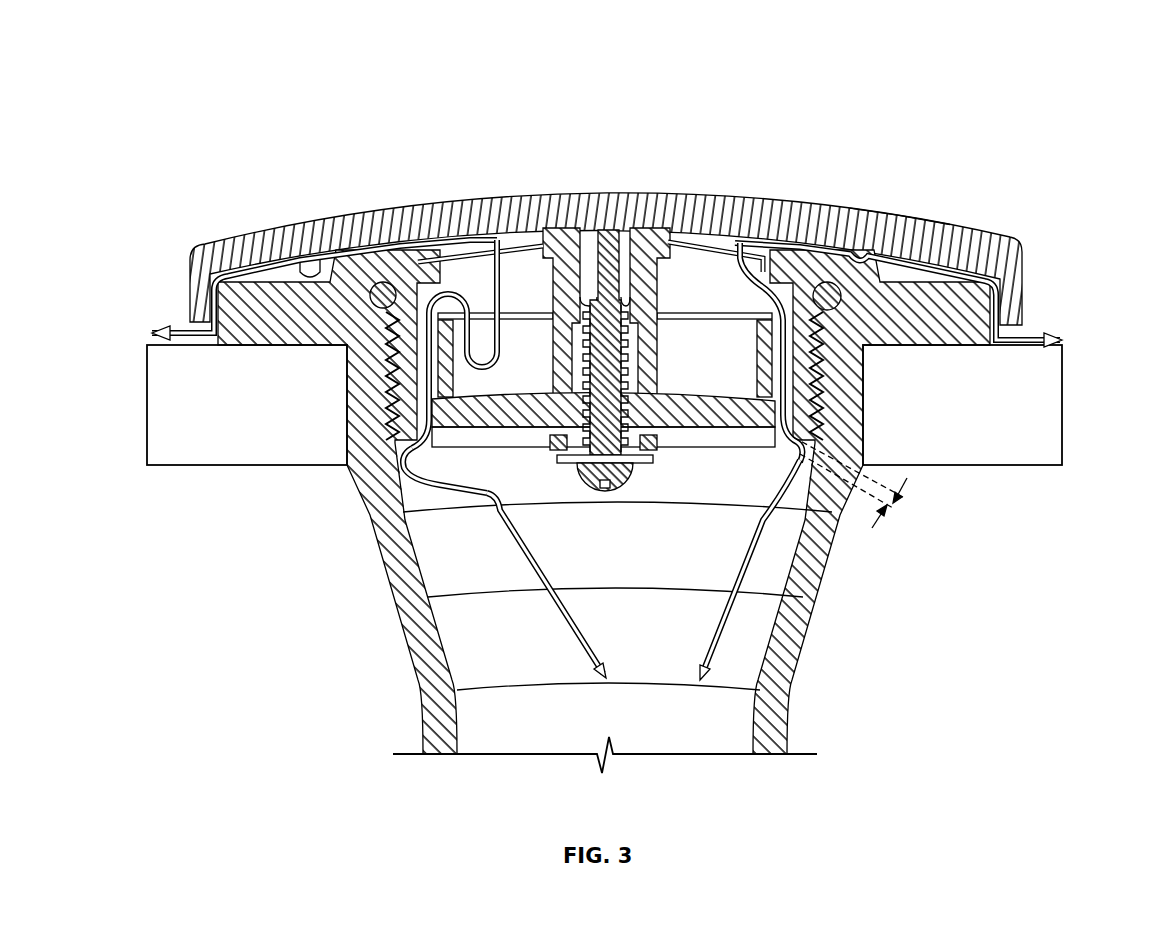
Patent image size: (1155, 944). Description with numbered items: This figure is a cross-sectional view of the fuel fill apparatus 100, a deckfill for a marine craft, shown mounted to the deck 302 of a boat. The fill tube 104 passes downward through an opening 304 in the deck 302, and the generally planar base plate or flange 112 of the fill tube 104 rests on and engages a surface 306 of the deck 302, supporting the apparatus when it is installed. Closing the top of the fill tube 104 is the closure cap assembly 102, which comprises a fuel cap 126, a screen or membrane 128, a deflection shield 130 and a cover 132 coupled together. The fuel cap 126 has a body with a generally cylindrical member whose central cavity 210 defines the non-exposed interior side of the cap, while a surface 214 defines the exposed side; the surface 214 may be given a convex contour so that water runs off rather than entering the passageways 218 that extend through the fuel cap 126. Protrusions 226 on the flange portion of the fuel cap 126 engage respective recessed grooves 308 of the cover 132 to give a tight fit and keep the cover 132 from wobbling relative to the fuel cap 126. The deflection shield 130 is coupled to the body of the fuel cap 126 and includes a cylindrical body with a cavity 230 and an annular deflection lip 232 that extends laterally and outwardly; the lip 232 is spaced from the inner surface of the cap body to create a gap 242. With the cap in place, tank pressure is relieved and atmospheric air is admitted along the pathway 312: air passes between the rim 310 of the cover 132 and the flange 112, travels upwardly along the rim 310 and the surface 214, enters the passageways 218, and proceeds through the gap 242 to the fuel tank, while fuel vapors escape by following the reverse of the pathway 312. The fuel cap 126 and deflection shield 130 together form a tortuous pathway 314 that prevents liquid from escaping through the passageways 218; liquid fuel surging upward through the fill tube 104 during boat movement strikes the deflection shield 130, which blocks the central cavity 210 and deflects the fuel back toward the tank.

The fuel fill apparatus 100 is at (220, 122).
The closure cap assembly 102 is at (1036, 247).
The fill tube 104 is at (788, 738).
The flange 112 is at (223, 317).
The fuel cap 126 is at (648, 237).
The membrane 128 is at (497, 253).
The deflection shield 130 is at (672, 410).
The cover 132 is at (900, 217).
The central cavity 210 is at (741, 304).
The surface 214 is at (553, 242).
The passageways 218 is at (457, 248).
The protrusions 226 is at (850, 248).
The cavity 230 is at (726, 364).
The annular deflection lip 232 is at (445, 476).
The gap 242 is at (898, 505).
The deck 302 is at (1013, 467).
The opening 304 is at (340, 470).
The surface 306 is at (1060, 345).
The recessed grooves 308 is at (863, 253).
The rim 310 is at (273, 266).
The pathway 312 is at (745, 562).
The tortuous pathway 314 is at (567, 625).